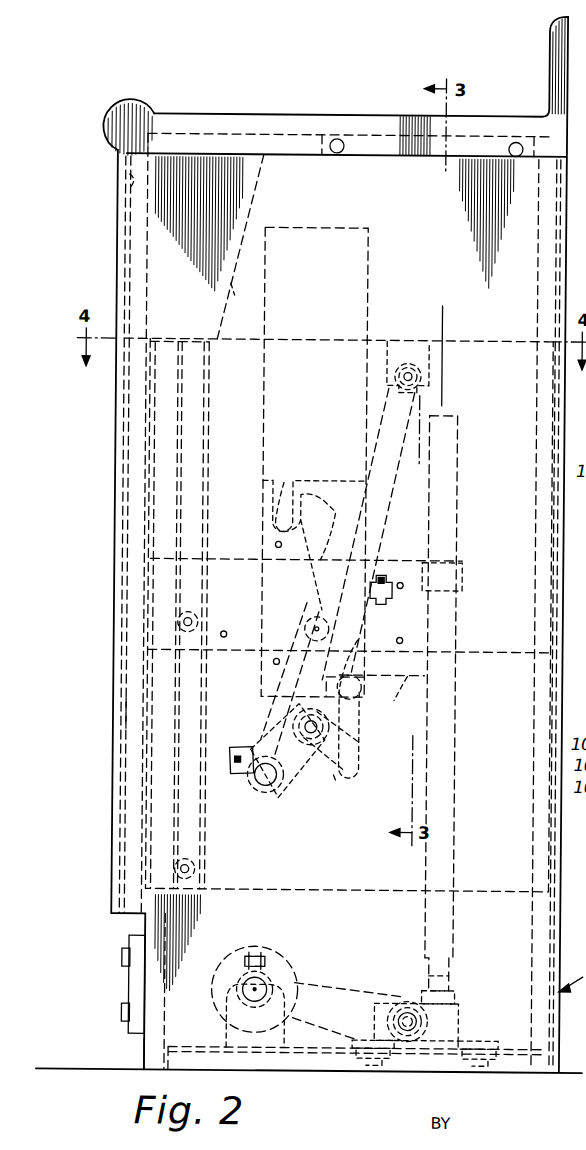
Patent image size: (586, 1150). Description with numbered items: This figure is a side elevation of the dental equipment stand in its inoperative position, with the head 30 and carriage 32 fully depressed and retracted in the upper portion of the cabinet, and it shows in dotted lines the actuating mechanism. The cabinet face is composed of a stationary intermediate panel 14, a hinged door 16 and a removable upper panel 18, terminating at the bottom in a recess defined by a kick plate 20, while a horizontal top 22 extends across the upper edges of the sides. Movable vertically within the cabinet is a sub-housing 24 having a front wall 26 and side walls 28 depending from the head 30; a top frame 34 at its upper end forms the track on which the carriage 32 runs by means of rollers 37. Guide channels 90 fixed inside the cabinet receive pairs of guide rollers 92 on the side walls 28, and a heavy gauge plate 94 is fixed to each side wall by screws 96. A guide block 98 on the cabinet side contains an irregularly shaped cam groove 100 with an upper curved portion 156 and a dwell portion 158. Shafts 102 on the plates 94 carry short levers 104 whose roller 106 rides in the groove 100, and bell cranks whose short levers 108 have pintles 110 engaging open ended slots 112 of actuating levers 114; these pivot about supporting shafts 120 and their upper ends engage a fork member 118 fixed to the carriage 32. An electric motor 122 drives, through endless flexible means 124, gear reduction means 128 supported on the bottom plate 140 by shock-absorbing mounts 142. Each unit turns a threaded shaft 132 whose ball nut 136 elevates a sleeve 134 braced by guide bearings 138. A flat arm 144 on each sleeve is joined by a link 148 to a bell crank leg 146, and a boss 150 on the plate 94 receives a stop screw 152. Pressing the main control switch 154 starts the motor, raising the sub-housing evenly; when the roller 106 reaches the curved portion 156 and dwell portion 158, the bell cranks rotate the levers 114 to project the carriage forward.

The intermediate panel 14 is at (128, 402).
The door 16 is at (128, 711).
The upper panel 18 is at (128, 184).
The kick plate 20 is at (148, 1043).
The top 22 is at (366, 115).
The sub-housing 24 is at (220, 404).
The front wall 26 is at (150, 501).
The side walls 28 is at (508, 656).
The head 30 is at (216, 168).
The carriage 32 is at (232, 289).
The top frame 34 is at (260, 155).
The rollers 37 is at (512, 144).
The guide channels 90 is at (178, 823).
The guide rollers 92 is at (200, 876).
The heavy gauge plate 94 is at (331, 880).
The screws 96 is at (428, 564).
The guide block 98 is at (262, 528).
The cam groove 100 is at (358, 640).
The shafts 102 is at (312, 742).
The short levers 104 is at (330, 733).
The roller 106 is at (355, 700).
The short levers 108 is at (262, 738).
The pintles 110 is at (267, 790).
The open ended slots 112 is at (240, 785).
The actuating levers 114 is at (305, 626).
The fork member 118 is at (427, 376).
The supporting shafts 120 is at (308, 613).
The electric motor 122 is at (242, 958).
The endless flexible means 124 is at (362, 990).
The gear reduction means 128 is at (470, 1010).
The threaded shaft 132 is at (452, 998).
The sleeves 134 is at (456, 792).
The ball nut 136 is at (448, 975).
The guide bearings 138 is at (462, 578).
The bottom plate 140 is at (318, 1053).
The shock-absorbing mounts 142 is at (500, 1050).
The flat arm 144 is at (408, 676).
The legs 146 is at (335, 775).
The links 148 is at (355, 758).
The boss 150 is at (402, 582).
The stop screw 152 is at (383, 576).
The main control switch 154 is at (132, 978).
The upper curved portion 156 is at (336, 468).
The dwell portion 158 is at (283, 495).